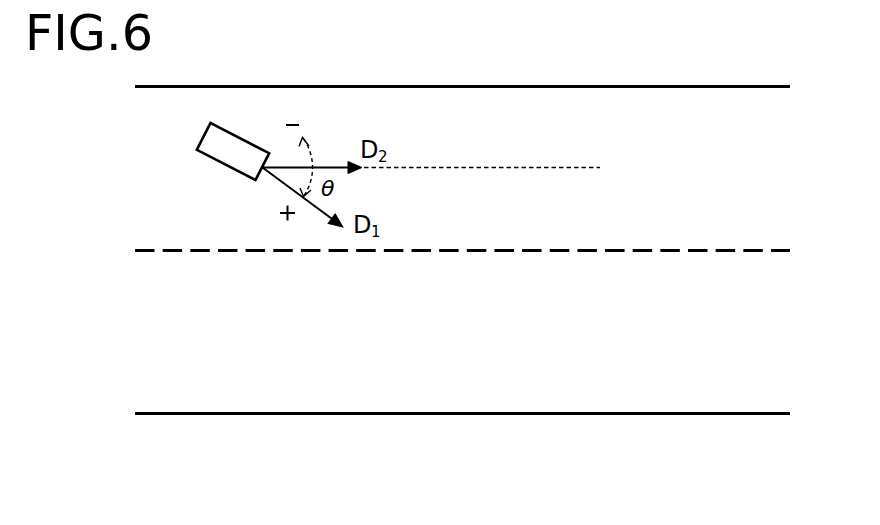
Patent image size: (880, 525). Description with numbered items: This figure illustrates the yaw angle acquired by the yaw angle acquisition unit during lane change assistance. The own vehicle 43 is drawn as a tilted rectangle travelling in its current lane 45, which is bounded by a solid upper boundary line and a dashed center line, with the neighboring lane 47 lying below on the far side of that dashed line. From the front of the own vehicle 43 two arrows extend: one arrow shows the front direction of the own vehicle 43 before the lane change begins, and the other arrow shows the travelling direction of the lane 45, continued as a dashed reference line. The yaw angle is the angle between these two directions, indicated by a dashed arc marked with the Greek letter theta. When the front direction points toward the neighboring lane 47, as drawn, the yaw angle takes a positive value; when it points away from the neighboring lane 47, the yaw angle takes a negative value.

The own vehicle 43 is at (230, 122).
The lane 45 is at (680, 127).
The neighboring lane 47 is at (680, 387).